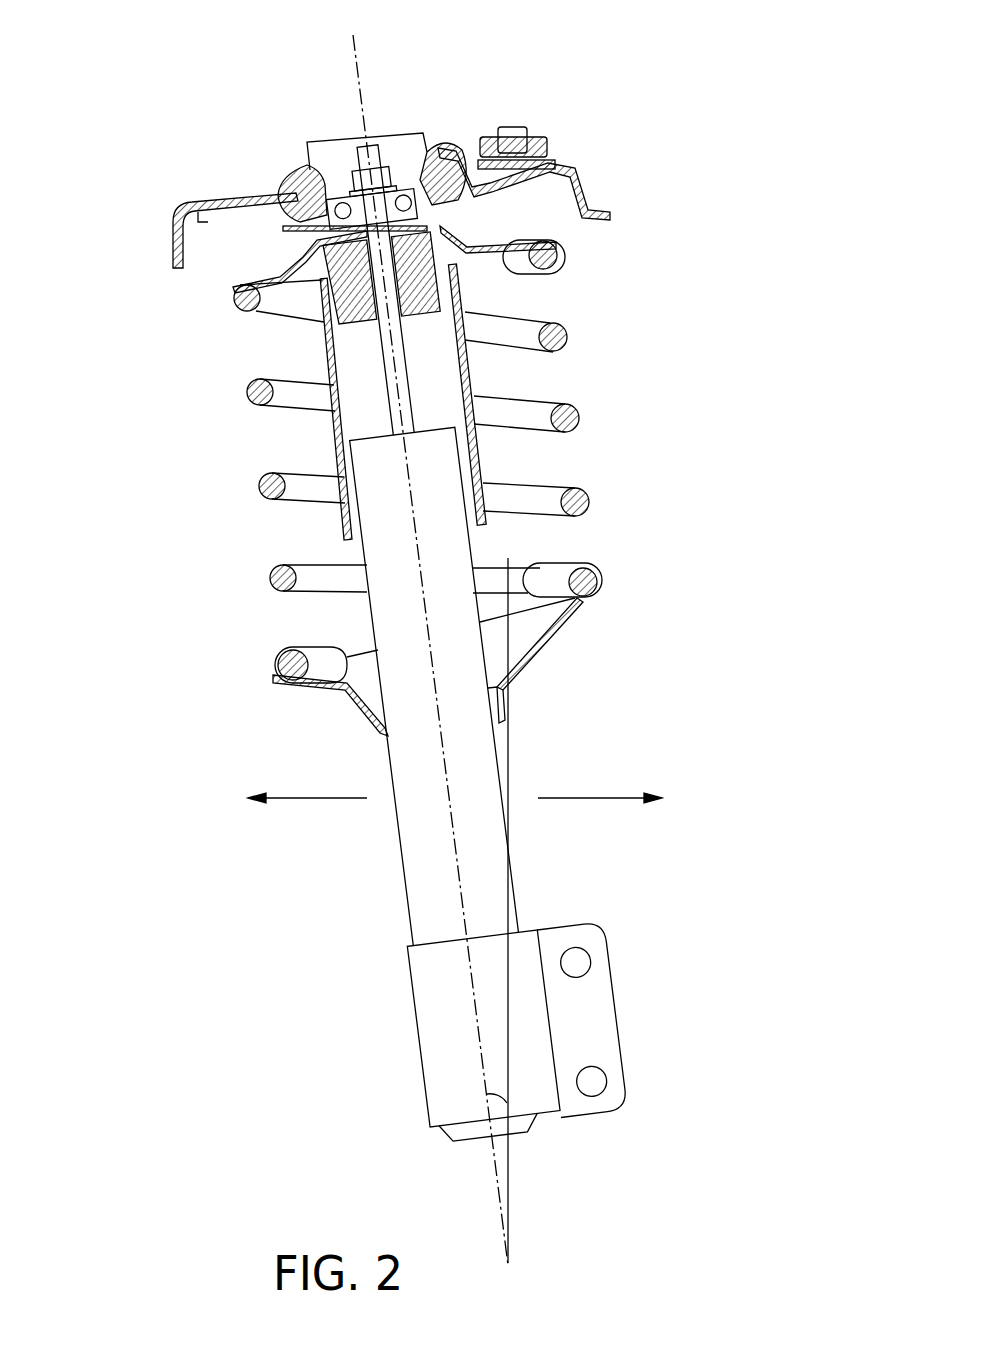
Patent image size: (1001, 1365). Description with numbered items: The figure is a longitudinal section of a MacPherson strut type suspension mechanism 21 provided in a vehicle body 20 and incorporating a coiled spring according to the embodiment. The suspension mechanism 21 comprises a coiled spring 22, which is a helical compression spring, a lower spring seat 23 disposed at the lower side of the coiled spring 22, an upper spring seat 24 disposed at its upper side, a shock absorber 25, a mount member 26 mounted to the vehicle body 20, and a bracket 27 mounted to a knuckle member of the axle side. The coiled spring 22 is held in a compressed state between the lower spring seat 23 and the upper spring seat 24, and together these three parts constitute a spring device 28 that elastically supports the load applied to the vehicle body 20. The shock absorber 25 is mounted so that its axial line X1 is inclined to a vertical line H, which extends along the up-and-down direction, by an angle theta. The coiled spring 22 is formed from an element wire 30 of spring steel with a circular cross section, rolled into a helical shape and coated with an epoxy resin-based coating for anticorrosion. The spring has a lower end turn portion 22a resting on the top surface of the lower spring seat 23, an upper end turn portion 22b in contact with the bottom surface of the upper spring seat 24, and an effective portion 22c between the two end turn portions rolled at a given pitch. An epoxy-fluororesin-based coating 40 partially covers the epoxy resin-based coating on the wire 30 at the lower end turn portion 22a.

The vehicle body 20 is at (575, 171).
The suspension mechanism 21 is at (603, 73).
The coiled spring 22 is at (444, 431).
The lower end turn portion 22a is at (601, 580).
The upper end turn portion 22b is at (556, 265).
The effective portion 22c is at (577, 422).
The lower spring seat 23 is at (322, 689).
The upper spring seat 24 is at (489, 239).
The shock absorber 25 is at (487, 540).
The mount member 26 is at (303, 160).
The bracket 27 is at (603, 1021).
The spring device 28 is at (248, 446).
The element wire 30 is at (568, 340).
The epoxy-fluororesin-based coating 40 is at (548, 590).
The vertical line H is at (510, 742).
The axial line X1 is at (457, 862).